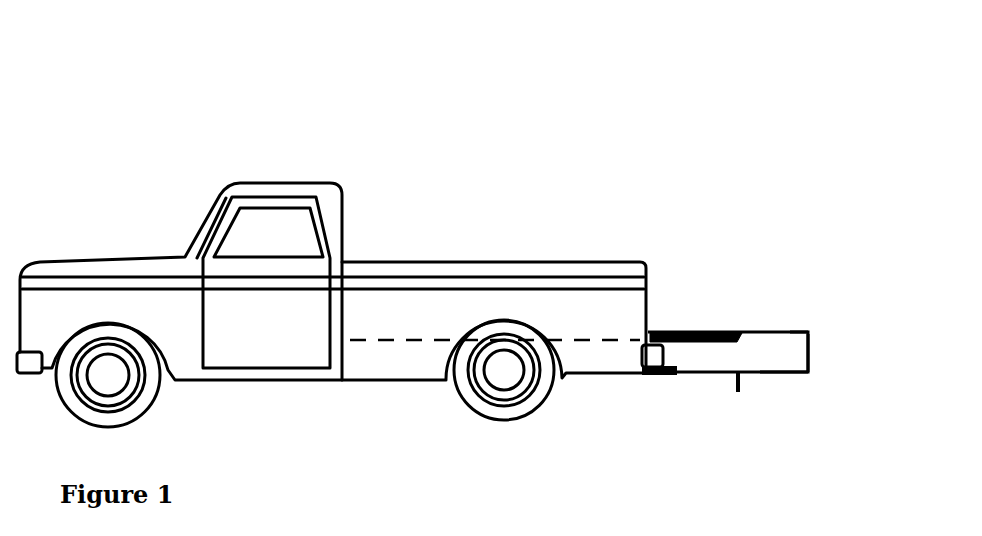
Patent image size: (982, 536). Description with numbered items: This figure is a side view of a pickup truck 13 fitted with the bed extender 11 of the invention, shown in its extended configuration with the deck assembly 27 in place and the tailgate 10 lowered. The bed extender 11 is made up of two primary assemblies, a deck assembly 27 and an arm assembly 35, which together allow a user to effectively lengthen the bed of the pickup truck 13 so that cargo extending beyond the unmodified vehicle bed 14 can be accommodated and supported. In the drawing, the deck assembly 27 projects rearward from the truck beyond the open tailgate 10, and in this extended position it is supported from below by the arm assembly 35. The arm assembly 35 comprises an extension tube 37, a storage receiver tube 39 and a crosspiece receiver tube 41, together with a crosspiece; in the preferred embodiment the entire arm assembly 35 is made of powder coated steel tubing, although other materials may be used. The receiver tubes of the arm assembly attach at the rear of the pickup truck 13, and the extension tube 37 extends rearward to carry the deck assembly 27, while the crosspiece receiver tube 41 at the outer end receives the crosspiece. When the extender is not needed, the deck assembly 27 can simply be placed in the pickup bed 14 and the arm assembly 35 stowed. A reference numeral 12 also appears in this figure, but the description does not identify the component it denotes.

The tailgate 10 is at (724, 341).
The bed extender 11 is at (766, 383).
The hitch receiver 12 is at (662, 372).
The pickup truck 13 is at (227, 157).
The vehicle bed 14 is at (560, 337).
The deck assembly 27 is at (670, 328).
The arm assembly 35 is at (810, 372).
The extension tube 37 is at (785, 373).
The storage receiver tube 39 is at (733, 381).
The crosspiece receiver tube 41 is at (808, 352).